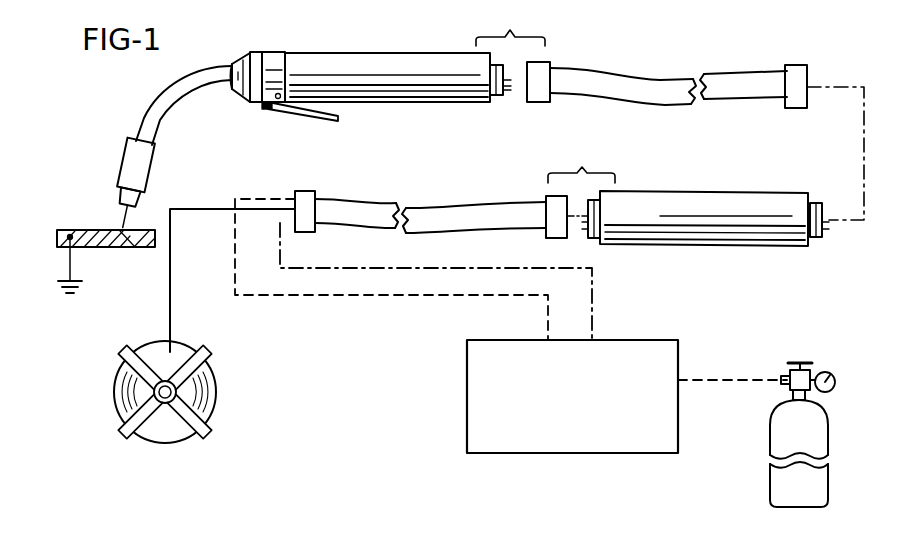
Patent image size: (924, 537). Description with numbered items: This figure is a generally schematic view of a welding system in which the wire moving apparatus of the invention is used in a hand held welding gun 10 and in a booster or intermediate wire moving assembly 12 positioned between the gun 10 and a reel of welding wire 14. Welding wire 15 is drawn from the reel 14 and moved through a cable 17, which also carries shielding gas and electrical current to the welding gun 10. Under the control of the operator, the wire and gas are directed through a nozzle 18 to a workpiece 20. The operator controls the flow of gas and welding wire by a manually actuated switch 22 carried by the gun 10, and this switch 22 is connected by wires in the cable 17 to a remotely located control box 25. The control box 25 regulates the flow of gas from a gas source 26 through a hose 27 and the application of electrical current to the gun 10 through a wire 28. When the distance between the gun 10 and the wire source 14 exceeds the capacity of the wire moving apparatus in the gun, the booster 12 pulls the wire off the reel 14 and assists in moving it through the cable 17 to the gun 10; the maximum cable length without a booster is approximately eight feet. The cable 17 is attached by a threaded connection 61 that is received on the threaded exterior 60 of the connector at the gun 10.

The hand held welding gun 10 is at (379, 52).
The booster or intermediate wire moving assembly 12 is at (688, 188).
The reel of welding wire 14 is at (216, 400).
The welding wire 15 is at (169, 299).
The cable 17 is at (716, 80).
The nozzle 18 is at (128, 153).
The workpiece 20 is at (88, 229).
The manually actuated switch 22 is at (304, 116).
The control box 25 is at (588, 405).
The gas source 26 is at (773, 445).
The hose 27 is at (304, 300).
The wire 28 is at (368, 267).
The threaded exterior 60 is at (500, 102).
The threaded connection 61 is at (546, 60).